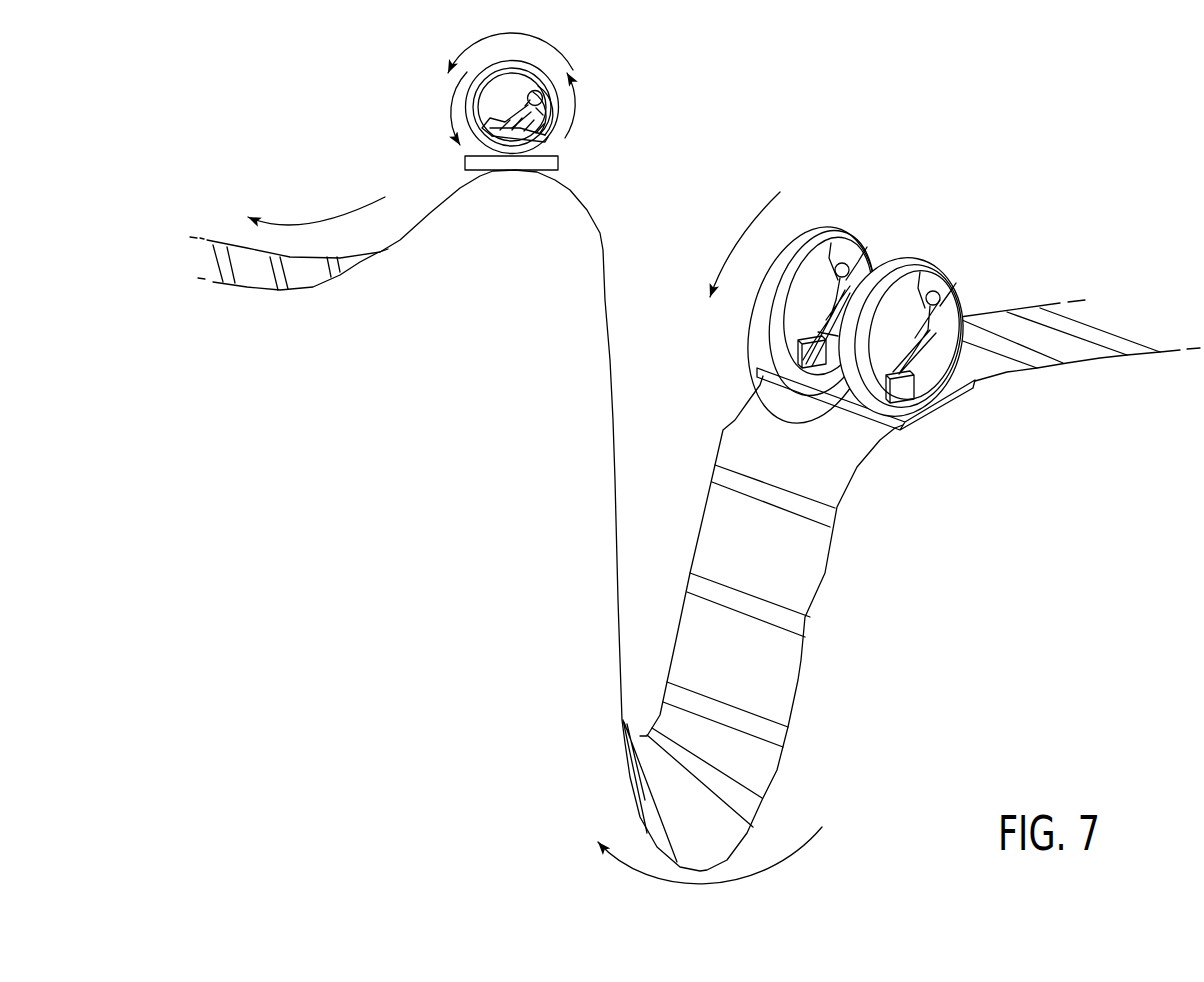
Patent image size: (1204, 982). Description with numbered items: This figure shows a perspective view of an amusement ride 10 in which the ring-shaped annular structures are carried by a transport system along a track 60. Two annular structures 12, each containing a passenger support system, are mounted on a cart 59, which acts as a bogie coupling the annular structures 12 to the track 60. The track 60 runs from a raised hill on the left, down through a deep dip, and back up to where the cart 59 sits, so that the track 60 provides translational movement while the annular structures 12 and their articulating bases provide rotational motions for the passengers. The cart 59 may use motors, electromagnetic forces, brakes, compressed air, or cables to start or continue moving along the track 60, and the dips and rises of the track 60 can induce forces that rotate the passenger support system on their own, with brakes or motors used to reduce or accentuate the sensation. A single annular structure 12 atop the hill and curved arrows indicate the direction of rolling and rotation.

The amusement ride 10 is at (695, 458).
The annular structure 12 is at (872, 335).
The cart 59 is at (955, 395).
The track 60 is at (823, 567).